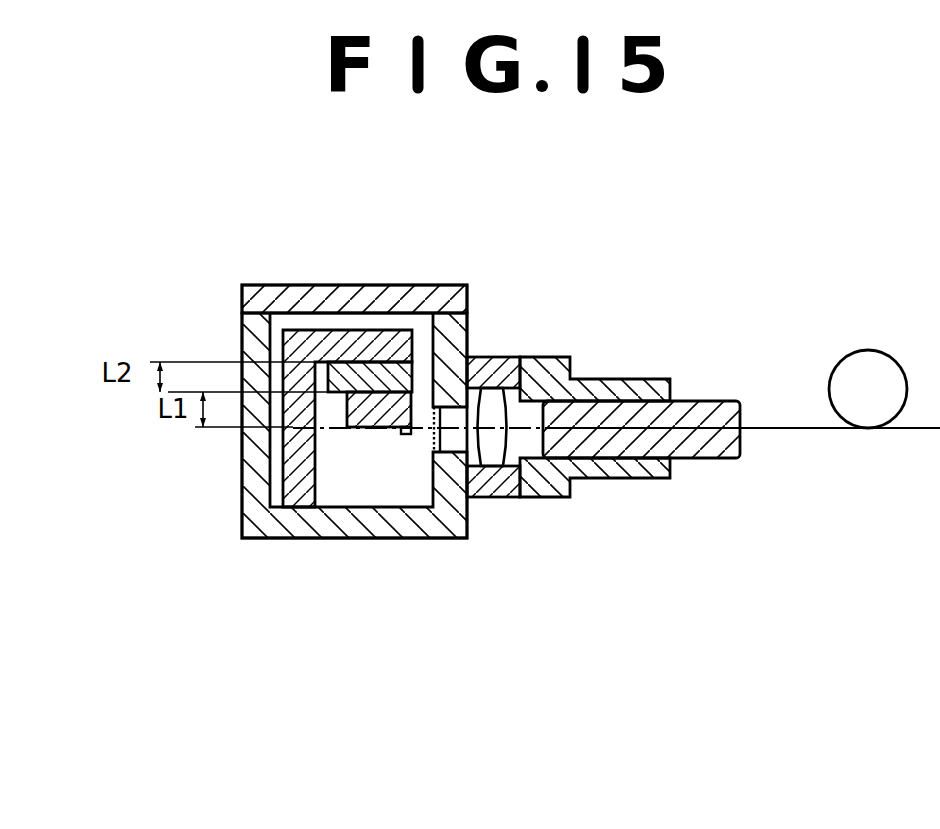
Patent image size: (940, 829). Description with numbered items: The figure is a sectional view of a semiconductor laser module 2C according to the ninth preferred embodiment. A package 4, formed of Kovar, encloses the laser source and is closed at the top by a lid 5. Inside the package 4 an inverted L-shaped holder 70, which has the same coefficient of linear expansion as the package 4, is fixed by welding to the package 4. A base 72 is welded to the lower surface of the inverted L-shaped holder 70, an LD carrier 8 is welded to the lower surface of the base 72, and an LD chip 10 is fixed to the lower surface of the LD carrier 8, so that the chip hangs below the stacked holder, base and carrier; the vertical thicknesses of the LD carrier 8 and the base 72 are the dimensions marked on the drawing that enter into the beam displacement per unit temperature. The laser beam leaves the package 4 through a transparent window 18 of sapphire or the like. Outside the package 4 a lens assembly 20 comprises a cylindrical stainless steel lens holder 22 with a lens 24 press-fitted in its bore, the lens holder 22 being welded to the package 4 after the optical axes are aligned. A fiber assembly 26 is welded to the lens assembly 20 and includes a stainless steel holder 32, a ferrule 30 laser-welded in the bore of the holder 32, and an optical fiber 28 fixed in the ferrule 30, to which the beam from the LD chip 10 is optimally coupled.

The semiconductor laser module 2C is at (344, 280).
The package 4 is at (302, 530).
The lid 5 is at (296, 292).
The LD carrier 8 is at (354, 417).
The LD chip 10 is at (405, 432).
The transparent window 18 is at (430, 446).
The lens assembly 20 is at (486, 348).
The lens holder 22 is at (495, 498).
The lens 24 is at (503, 405).
The fiber assembly 26 is at (642, 372).
The optical fiber 28 is at (862, 350).
The ferrule 30 is at (710, 410).
The holder 32 is at (617, 474).
The inverted L-shaped holder 70 is at (293, 475).
The base 72 is at (384, 360).